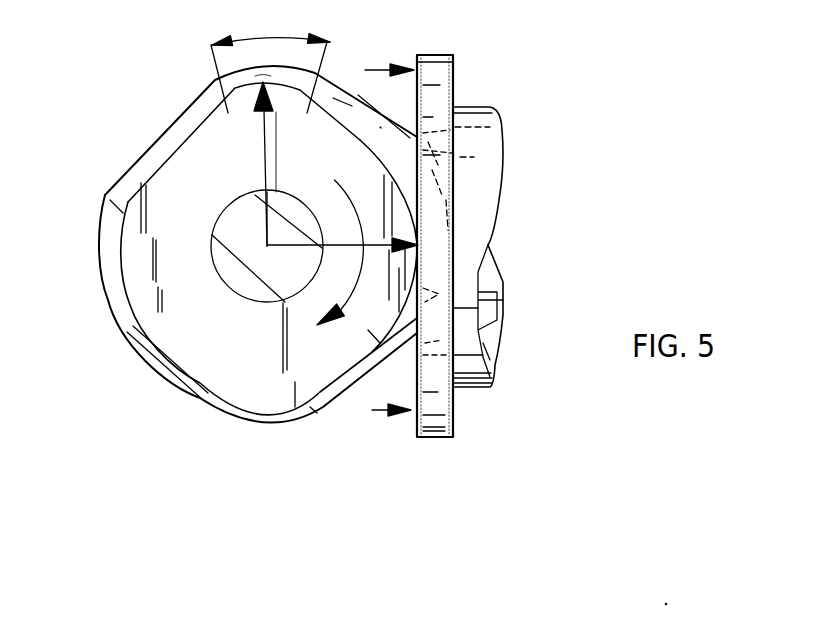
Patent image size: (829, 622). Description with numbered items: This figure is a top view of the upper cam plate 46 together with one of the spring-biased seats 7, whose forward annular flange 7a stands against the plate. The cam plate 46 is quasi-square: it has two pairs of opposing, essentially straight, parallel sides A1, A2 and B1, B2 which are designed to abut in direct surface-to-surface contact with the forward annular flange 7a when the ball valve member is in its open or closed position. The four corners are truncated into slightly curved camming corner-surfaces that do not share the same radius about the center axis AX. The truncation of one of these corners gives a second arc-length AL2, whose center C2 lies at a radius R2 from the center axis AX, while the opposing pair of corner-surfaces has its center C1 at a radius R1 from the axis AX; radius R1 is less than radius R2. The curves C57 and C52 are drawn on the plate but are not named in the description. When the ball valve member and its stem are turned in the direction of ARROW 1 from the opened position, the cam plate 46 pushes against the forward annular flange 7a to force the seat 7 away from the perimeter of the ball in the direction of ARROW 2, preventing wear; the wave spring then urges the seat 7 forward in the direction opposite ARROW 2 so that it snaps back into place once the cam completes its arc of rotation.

The upper cam plate 46 is at (237, 370).
The center axis AX is at (267, 248).
The radius R1 is at (342, 274).
The radius R2 is at (272, 128).
The center of arc-length AL1 C1 is at (420, 243).
The center of arc-length AL2 C2 is at (262, 86).
The side A1 is at (165, 160).
The side A2 is at (366, 321).
The side B1 is at (370, 143).
The side B2 is at (142, 365).
The curve segment C57 is at (120, 269).
The curve segment C52 is at (267, 420).
The second arc-length AL2 is at (256, 25).
The direction of rotation ARROW 1 is at (347, 288).
The direction ARROW 2 is at (378, 412).
The forward annular flange 7a is at (438, 70).
The spring-biased seat 7 is at (493, 97).